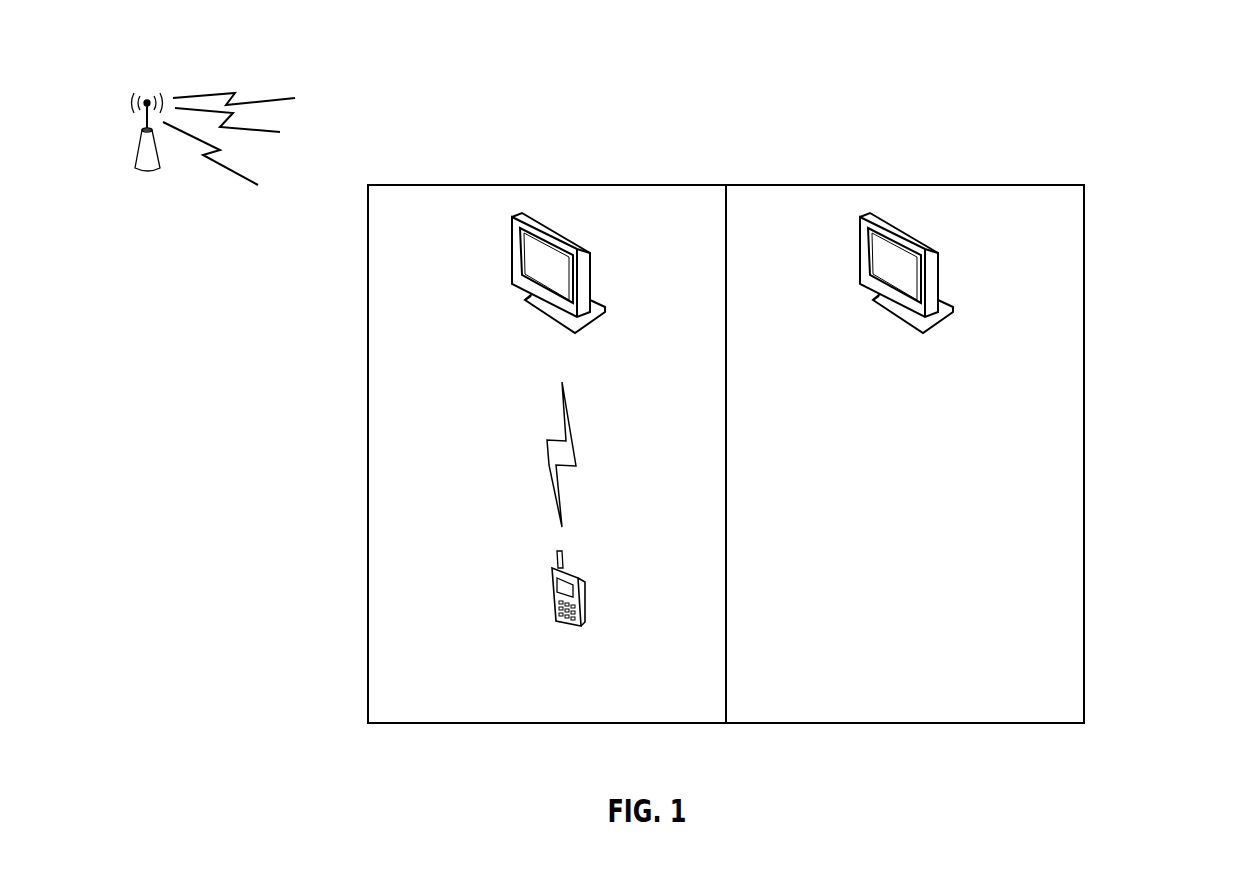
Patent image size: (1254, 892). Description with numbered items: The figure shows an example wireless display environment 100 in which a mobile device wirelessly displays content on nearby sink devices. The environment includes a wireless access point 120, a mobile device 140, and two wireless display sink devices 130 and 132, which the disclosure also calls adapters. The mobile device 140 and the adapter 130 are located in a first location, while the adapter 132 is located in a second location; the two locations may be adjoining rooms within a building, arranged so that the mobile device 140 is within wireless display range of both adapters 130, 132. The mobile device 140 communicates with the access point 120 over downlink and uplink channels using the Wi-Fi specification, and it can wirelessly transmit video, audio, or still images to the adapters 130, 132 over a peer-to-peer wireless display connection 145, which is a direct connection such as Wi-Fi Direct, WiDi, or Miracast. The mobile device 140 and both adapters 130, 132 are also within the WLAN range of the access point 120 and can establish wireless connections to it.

The wireless display environment 100 is at (1172, 100).
The wireless access point 120 is at (214, 146).
The wireless display sink device 130 is at (558, 287).
The wireless display sink device 132 is at (906, 287).
The mobile device 140 is at (570, 605).
The peer-to-peer wireless display connection 145 is at (540, 454).